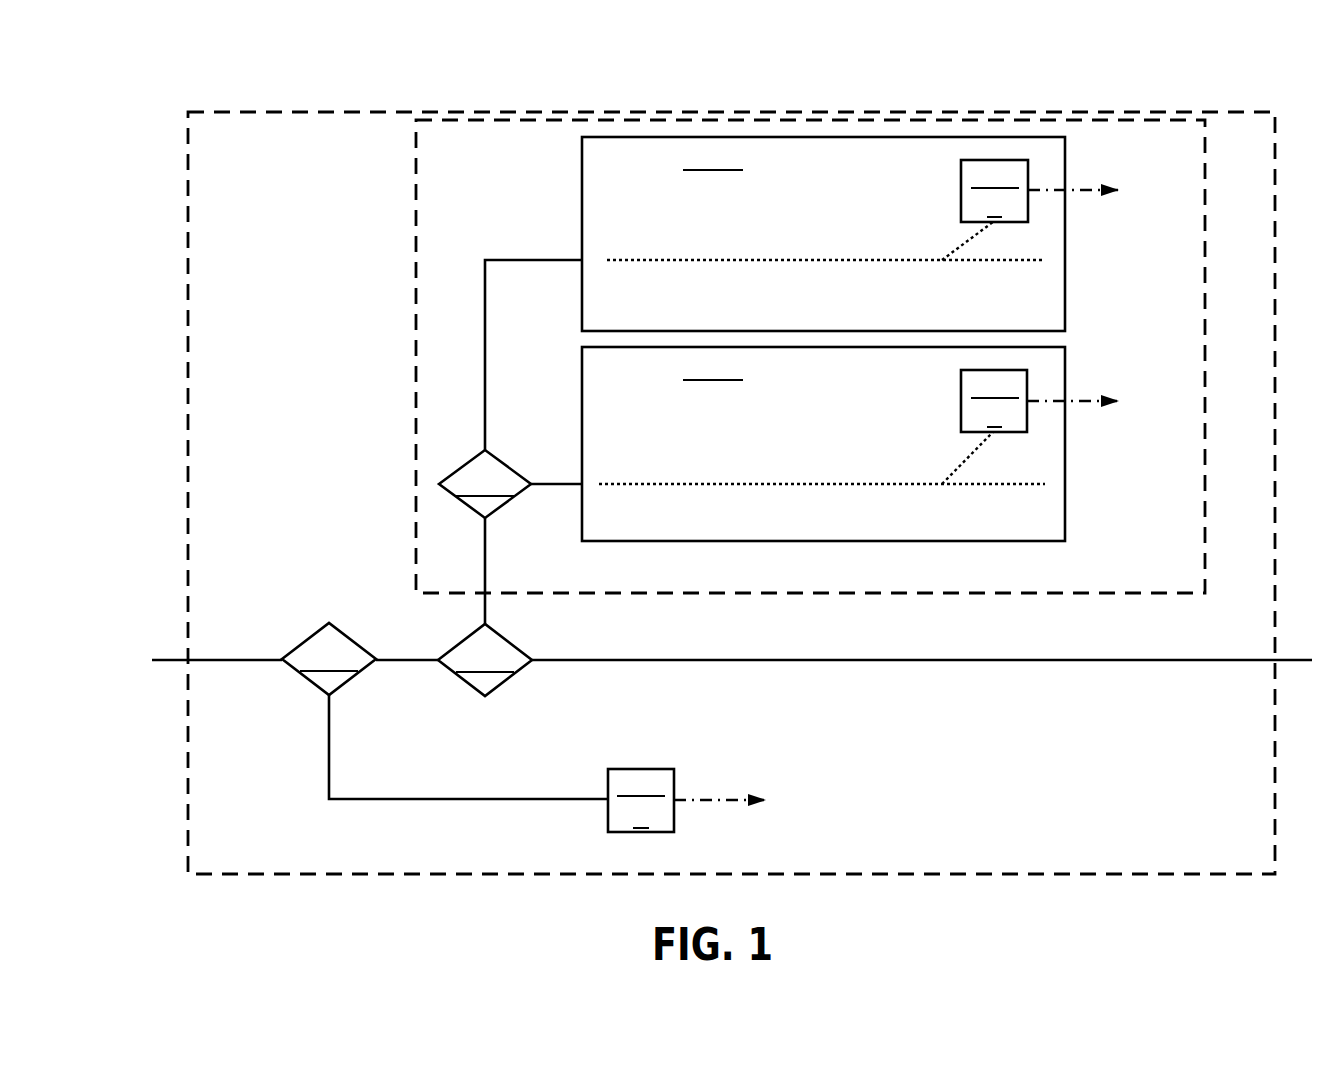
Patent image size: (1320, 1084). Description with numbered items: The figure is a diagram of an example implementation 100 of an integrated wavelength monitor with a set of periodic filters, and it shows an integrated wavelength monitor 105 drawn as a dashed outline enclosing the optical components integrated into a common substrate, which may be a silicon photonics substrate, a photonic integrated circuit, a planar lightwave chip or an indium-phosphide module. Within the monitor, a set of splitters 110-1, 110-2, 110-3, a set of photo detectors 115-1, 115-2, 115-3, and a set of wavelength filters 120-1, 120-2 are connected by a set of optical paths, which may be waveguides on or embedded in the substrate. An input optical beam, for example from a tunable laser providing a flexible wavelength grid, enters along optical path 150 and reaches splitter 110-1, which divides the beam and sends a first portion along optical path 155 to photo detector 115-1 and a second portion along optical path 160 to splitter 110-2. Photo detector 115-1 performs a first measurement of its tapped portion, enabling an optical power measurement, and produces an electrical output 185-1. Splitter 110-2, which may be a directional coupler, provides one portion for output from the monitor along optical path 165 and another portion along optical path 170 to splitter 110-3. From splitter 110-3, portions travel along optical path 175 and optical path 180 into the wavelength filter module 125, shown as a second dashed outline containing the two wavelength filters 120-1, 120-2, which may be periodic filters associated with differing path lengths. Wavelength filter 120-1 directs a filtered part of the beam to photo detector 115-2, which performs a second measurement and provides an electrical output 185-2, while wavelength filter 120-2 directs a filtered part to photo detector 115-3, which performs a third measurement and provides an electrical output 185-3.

The example implementation 100 is at (190, 62).
The integrated wavelength monitor 105 is at (731, 473).
The wavelength filter module 125 is at (788, 356).
The splitter 110-1 is at (329, 659).
The splitter 110-2 is at (485, 660).
The splitter 110-3 is at (485, 484).
The photo detector 115-1 is at (641, 800).
The photo detector 115-2 is at (994, 401).
The photo detector 115-3 is at (994, 191).
The wavelength filter 120-1 is at (823, 444).
The wavelength filter 120-2 is at (823, 234).
The optical path 150 is at (176, 660).
The optical path 155 is at (328, 770).
The optical path 160 is at (415, 660).
The optical path 165 is at (1275, 660).
The optical path 170 is at (485, 572).
The optical path 175 is at (565, 484).
The optical path 180 is at (485, 398).
The electrical output 185-1 is at (725, 800).
The electrical output 185-2 is at (1075, 400).
The electrical output 185-3 is at (1080, 190).